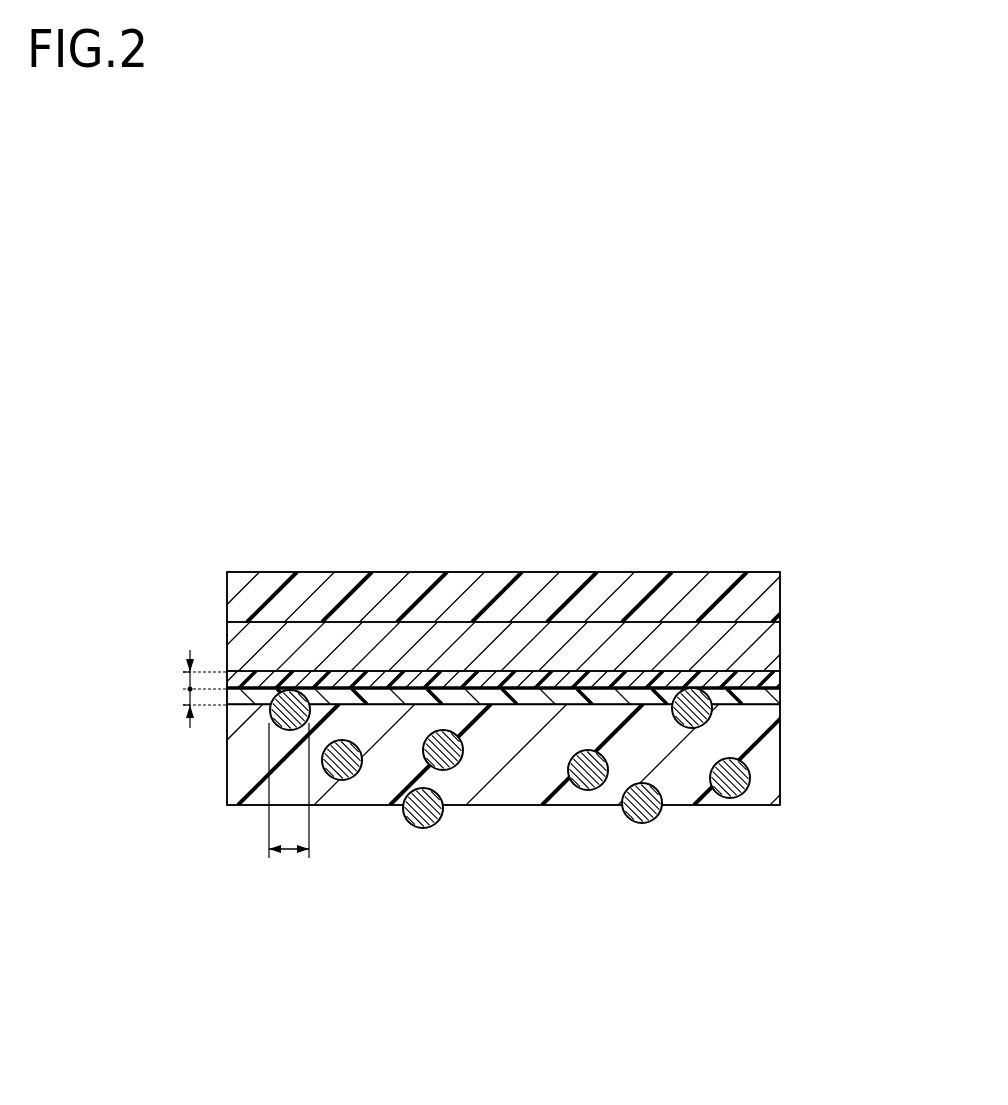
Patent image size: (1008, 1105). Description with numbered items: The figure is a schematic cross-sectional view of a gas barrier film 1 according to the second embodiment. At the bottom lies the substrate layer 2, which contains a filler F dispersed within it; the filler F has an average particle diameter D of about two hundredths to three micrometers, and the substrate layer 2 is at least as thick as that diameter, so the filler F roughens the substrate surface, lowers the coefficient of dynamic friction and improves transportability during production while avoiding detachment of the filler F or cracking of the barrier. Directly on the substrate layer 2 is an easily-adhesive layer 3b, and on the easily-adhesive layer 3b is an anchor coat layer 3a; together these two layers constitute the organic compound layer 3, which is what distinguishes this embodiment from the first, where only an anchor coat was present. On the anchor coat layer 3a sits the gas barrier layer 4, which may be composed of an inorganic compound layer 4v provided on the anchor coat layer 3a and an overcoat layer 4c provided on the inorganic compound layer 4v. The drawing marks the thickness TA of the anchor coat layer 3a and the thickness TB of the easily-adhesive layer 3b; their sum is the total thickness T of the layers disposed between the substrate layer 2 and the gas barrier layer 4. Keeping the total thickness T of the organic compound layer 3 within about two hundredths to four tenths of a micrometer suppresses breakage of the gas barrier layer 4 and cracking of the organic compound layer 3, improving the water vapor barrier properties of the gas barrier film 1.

The gas barrier film 1 is at (758, 531).
The substrate layer 2 is at (767, 769).
The organic compound layer 3 is at (550, 702).
The anchor coat layer 3a is at (767, 678).
The easily-adhesive layer 3b is at (767, 698).
The gas barrier layer 4 is at (517, 621).
The overcoat layer 4c is at (767, 600).
The inorganic compound layer 4v is at (512, 646).
The total thickness T is at (125, 653).
The thickness of the anchor coat layer TA is at (188, 683).
The thickness of the easily-adhesive layer TB is at (188, 698).
The average particle diameter D is at (287, 856).
The filler F is at (423, 829).